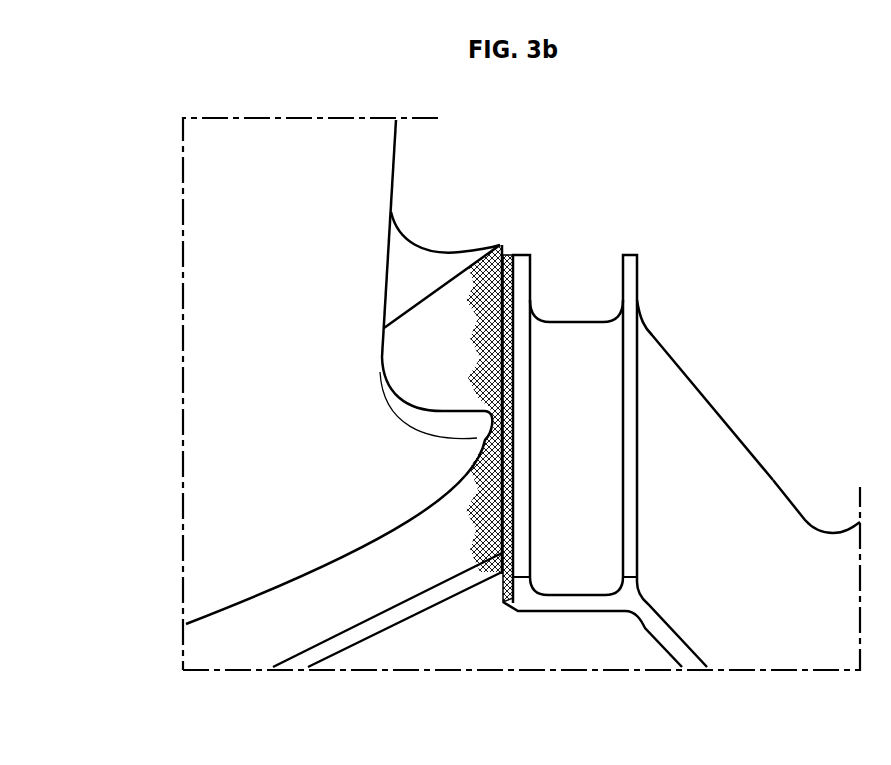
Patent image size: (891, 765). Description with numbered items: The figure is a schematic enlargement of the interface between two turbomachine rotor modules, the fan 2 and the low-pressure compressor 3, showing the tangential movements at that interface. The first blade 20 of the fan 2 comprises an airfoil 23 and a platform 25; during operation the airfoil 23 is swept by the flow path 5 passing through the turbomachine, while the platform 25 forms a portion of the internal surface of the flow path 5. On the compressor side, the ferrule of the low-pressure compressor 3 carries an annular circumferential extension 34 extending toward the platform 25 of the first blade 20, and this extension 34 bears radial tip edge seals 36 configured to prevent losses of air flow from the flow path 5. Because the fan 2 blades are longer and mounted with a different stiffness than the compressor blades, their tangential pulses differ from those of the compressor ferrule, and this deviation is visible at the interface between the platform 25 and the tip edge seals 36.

The fan 2 is at (200, 718).
The low-pressure compressor 3 is at (762, 272).
The flow path 5 is at (571, 240).
The first blade 20 is at (97, 416).
The airfoil 23 is at (272, 356).
The platform 25 is at (427, 355).
The circumferential extension 34 is at (706, 540).
The tip edge seals 36 is at (652, 282).